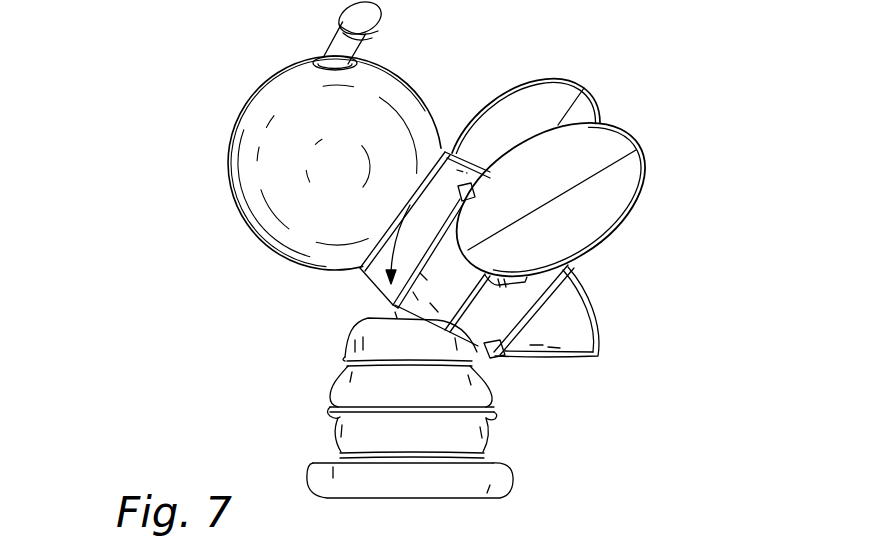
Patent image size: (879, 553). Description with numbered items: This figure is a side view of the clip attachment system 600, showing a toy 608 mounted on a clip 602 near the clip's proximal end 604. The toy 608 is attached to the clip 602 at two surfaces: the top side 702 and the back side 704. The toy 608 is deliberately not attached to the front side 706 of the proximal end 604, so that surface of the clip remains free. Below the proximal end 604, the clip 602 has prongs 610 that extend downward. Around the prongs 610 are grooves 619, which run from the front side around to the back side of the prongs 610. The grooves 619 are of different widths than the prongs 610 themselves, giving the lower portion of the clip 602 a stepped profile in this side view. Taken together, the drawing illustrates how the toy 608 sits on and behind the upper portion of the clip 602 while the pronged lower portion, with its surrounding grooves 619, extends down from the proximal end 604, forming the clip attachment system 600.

The clip attachment system 600 is at (130, 110).
The clip 602 is at (491, 429).
The proximal end 604 is at (445, 150).
The toy 608 is at (735, 225).
The prongs 610 is at (490, 405).
The grooves 619 is at (468, 445).
The top side 702 is at (392, 304).
The back side 704 is at (470, 345).
The front side 706 is at (367, 316).